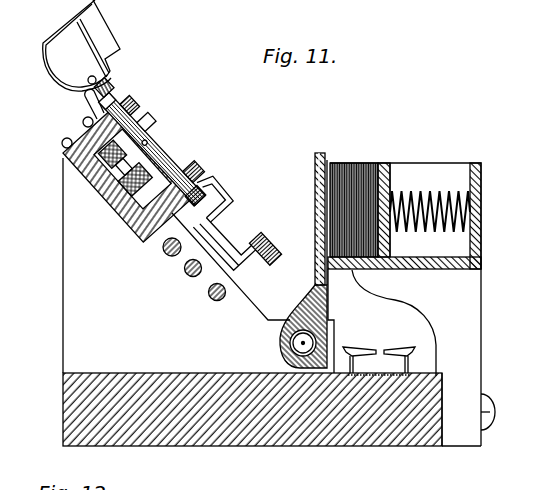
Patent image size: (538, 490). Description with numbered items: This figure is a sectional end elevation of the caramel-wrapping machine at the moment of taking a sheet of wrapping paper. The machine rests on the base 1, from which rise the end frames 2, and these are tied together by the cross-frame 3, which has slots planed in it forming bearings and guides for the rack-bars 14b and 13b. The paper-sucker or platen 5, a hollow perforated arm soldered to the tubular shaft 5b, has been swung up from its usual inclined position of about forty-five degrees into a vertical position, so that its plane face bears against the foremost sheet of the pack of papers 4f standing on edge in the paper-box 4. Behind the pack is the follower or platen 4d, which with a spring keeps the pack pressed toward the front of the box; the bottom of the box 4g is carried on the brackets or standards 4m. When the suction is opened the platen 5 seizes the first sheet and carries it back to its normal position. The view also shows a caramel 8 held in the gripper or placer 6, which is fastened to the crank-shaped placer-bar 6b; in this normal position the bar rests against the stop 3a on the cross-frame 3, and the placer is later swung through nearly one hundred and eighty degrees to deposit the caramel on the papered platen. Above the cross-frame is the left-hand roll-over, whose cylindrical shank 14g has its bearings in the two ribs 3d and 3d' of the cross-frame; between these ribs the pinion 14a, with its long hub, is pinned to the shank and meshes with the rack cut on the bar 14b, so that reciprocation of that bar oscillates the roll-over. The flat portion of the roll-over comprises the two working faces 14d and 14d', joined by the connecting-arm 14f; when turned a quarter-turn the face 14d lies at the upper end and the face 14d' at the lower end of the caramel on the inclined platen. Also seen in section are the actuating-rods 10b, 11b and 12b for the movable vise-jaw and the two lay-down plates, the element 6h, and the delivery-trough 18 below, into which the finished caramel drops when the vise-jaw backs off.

The base 1 is at (80, 412).
The end frames 2 is at (176, 265).
The cross-frame 3 is at (137, 222).
The stop 3a is at (92, 106).
The rib 3d is at (146, 96).
The rib 3d' is at (208, 166).
The paper-box 4 is at (404, 304).
The follower or platen 4d is at (390, 247).
The pack of papers 4f is at (357, 164).
The bottom of the box 4g is at (423, 265).
The brackets or standards 4m is at (411, 357).
The paper-sucker or platen 5 is at (316, 162).
The tubular shaft 5b is at (293, 342).
The gripper or placer 6 is at (69, 45).
The placer-bar 6b is at (107, 85).
The shank 6h is at (118, 98).
The caramel 8 is at (98, 38).
The actuating-rod 10b is at (185, 271).
The actuating-rod 11b is at (164, 249).
The actuating-rod 12b is at (209, 292).
The rack-bar 13b is at (108, 202).
The pinion 14a is at (158, 115).
The rack-bar 14b is at (105, 160).
The working face 14d is at (225, 197).
The working face 14d' is at (282, 247).
The connecting-arm 14f is at (218, 241).
The cylindrical shank 14g is at (157, 147).
The delivery-trough 18 is at (379, 361).